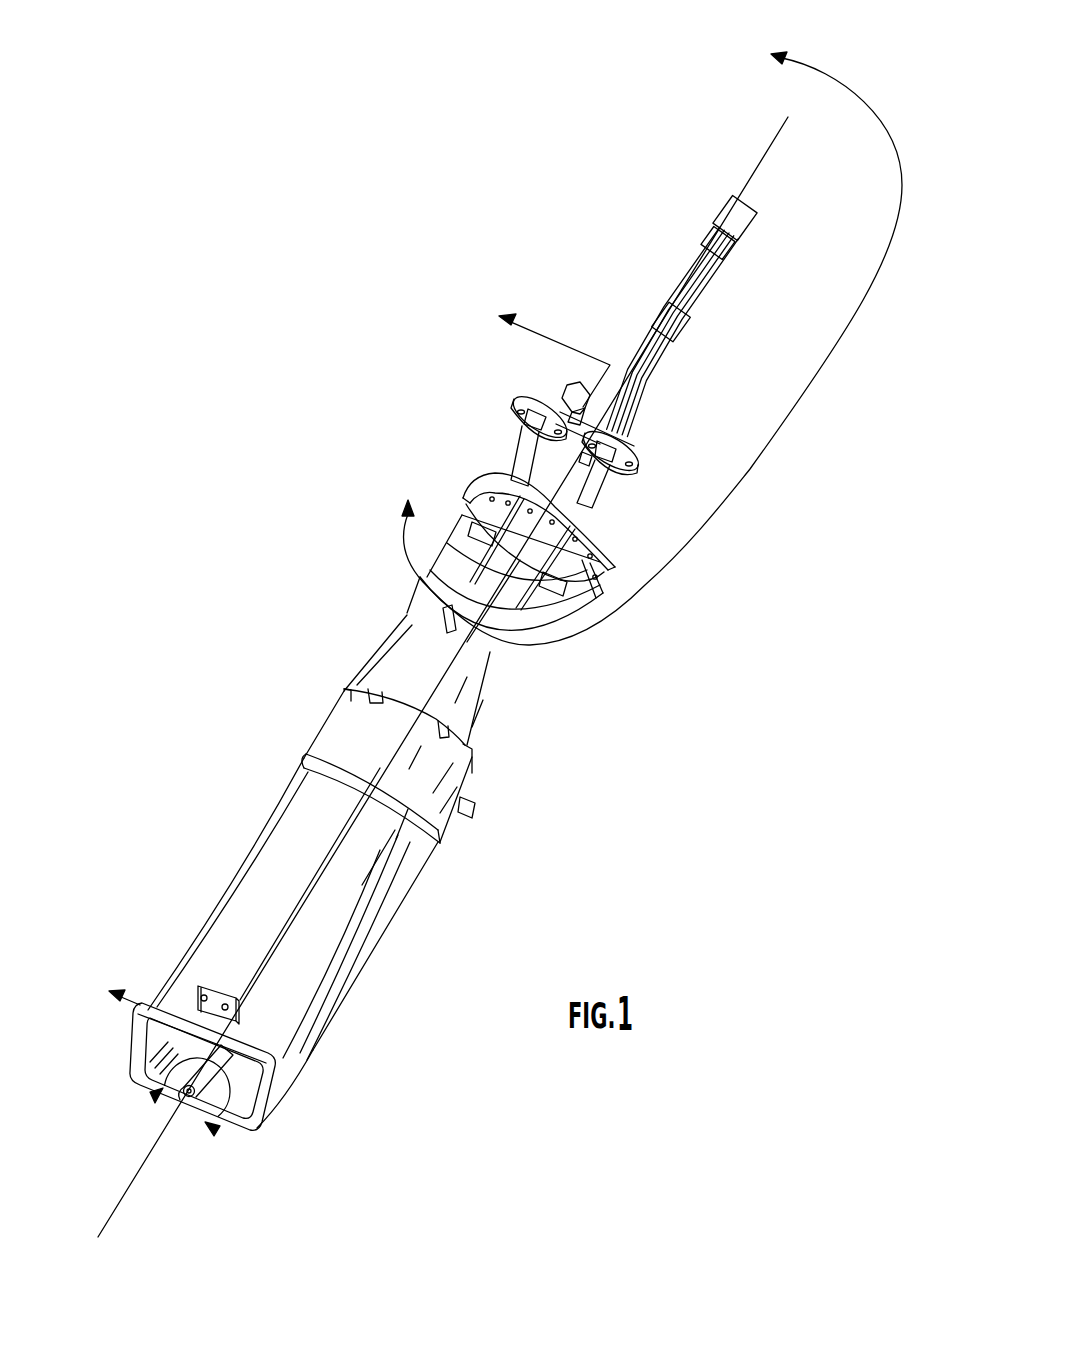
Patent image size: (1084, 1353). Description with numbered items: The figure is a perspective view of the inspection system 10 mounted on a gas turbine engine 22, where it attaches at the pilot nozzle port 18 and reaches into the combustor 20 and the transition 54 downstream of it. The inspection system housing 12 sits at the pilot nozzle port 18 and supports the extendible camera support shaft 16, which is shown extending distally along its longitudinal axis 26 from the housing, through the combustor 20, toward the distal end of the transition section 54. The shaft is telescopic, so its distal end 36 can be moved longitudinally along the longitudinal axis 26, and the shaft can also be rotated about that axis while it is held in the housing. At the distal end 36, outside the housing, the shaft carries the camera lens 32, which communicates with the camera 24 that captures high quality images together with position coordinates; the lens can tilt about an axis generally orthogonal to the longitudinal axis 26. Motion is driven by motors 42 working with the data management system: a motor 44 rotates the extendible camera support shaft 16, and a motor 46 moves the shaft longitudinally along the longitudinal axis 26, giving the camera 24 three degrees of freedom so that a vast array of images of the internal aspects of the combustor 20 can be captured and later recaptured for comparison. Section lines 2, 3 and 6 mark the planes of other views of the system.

The inspection system 10 is at (579, 328).
The inspection system housing 12 is at (641, 433).
The extendible camera support shaft 16 is at (674, 305).
The pilot nozzle port 18 is at (538, 502).
The combustor 20 is at (548, 679).
The gas turbine engine 22 is at (596, 741).
The camera 24 is at (182, 1092).
The longitudinal axis 26 is at (765, 153).
The camera lens 32 is at (189, 1097).
The distal end 36 is at (195, 1096).
The motors 42 is at (768, 224).
The motor 44 is at (570, 388).
The motor 46 is at (723, 212).
The transition section 54 is at (390, 942).
The section line 2- 2 is at (359, 669).
The section line 3- 3 is at (647, 336).
The section line 6- 6 is at (187, 1104).